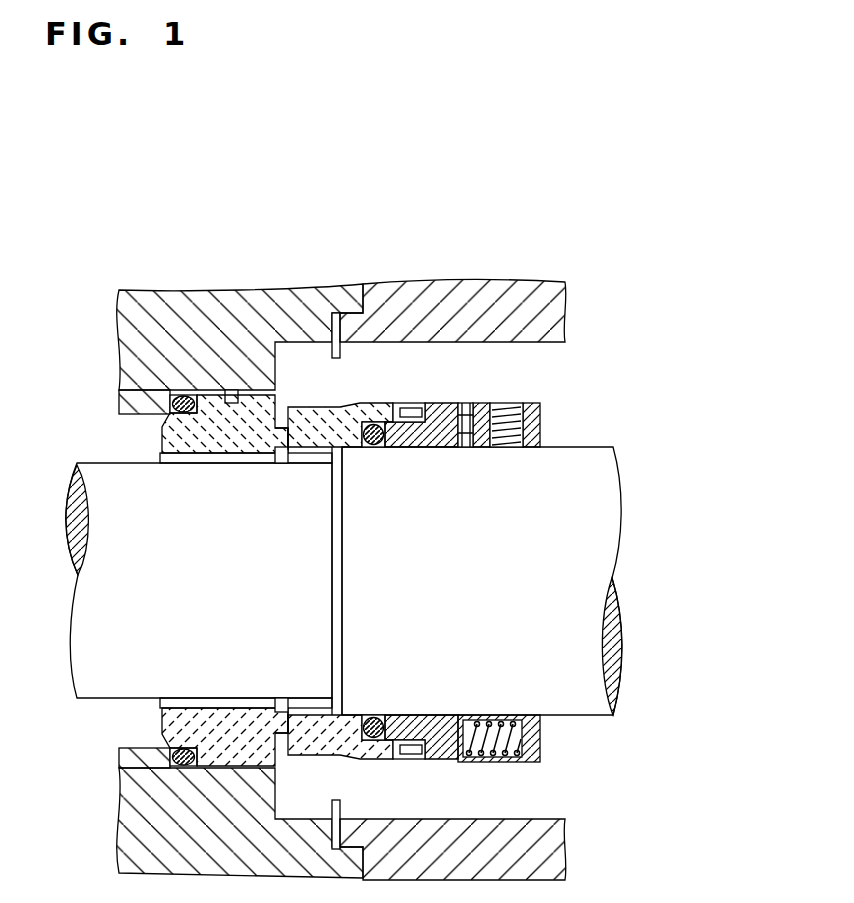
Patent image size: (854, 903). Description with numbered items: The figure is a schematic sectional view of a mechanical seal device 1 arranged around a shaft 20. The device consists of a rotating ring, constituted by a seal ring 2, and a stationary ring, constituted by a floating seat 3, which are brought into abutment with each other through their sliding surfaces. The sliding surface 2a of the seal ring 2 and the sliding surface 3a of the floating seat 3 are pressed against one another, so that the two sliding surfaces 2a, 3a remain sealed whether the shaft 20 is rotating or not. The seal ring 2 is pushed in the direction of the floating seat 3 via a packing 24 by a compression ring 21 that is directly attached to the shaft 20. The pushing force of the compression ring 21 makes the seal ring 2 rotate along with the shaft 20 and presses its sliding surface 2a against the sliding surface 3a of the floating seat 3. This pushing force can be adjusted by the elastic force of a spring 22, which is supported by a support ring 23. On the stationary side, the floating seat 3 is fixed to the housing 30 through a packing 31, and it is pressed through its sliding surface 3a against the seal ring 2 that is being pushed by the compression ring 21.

The mechanical seal device 1 is at (437, 397).
The seal ring 2 is at (362, 407).
The sliding surface of the seal ring 2a is at (283, 443).
The floating seat 3 is at (163, 425).
The sliding surface of the floating seat 3a is at (288, 430).
The shaft 20 is at (593, 540).
The compression ring 21 is at (452, 401).
The spring 22 is at (467, 757).
The support ring 23 is at (540, 750).
The packing 24 is at (373, 418).
The housing 30 is at (172, 300).
The packing 31 is at (119, 391).